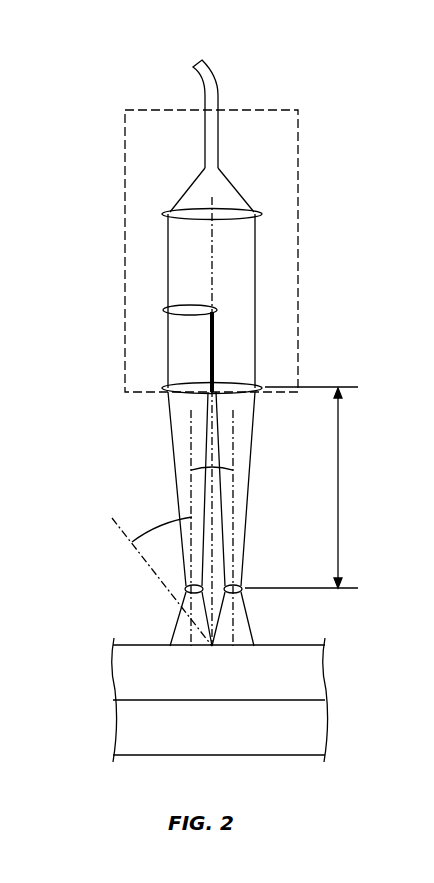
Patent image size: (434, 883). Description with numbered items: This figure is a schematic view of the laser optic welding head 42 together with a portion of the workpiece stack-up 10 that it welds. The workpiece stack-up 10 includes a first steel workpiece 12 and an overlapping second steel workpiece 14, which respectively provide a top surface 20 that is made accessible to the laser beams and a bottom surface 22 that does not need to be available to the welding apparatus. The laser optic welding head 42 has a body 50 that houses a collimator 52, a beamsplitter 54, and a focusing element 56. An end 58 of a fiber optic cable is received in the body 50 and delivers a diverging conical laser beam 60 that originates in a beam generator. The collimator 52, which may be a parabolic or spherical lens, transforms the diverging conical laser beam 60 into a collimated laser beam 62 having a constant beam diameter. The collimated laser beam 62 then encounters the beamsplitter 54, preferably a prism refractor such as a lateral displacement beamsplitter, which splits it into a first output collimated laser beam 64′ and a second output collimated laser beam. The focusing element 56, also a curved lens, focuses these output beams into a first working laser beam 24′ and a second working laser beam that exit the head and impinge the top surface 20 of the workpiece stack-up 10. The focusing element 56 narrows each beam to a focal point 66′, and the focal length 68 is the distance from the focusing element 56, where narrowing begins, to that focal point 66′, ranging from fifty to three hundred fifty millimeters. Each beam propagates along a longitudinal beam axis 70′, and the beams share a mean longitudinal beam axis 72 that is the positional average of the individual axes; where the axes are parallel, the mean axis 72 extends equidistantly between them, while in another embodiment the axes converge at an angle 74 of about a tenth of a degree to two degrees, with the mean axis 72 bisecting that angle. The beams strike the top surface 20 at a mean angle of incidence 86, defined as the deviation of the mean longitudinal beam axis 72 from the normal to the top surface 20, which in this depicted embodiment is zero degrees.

The workpiece stack-up 10 is at (101, 694).
The first steel workpiece 12 is at (310, 672).
The second steel workpiece 14 is at (310, 728).
The top surface 20 is at (305, 645).
The bottom surface 22 is at (308, 756).
The first working laser beam 24′ is at (243, 433).
The laser optic welding head 42 is at (314, 171).
The body 50 is at (298, 236).
The collimator 52 is at (186, 241).
The beamsplitter 54 is at (188, 337).
The focusing element 56 is at (190, 381).
The end of the fiber optic cable 58 is at (218, 97).
The diverging conical laser beam 60 is at (190, 192).
The collimated laser beam 62 is at (182, 261).
The first output collimated laser beam 64′ is at (243, 350).
The focal point of the first laser beam 66′ is at (240, 585).
The focal length 68 is at (338, 470).
The longitudinal beam axis of the first laser beam 70′ is at (234, 495).
The mean longitudinal beam axis 72 is at (217, 562).
The angle 74 is at (226, 467).
The mean angle of incidence 86 is at (162, 526).